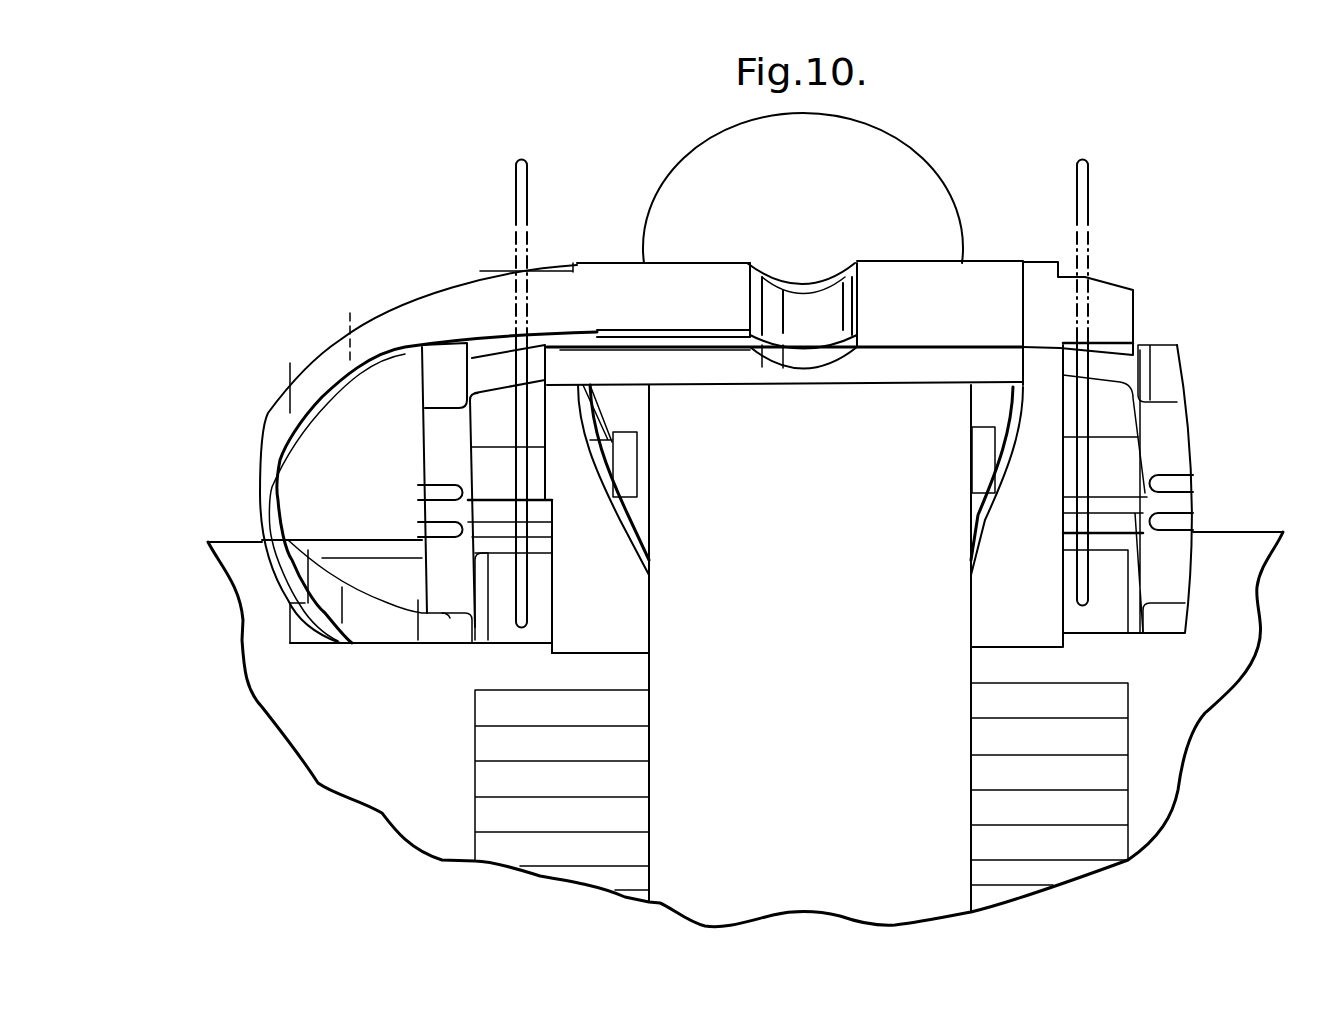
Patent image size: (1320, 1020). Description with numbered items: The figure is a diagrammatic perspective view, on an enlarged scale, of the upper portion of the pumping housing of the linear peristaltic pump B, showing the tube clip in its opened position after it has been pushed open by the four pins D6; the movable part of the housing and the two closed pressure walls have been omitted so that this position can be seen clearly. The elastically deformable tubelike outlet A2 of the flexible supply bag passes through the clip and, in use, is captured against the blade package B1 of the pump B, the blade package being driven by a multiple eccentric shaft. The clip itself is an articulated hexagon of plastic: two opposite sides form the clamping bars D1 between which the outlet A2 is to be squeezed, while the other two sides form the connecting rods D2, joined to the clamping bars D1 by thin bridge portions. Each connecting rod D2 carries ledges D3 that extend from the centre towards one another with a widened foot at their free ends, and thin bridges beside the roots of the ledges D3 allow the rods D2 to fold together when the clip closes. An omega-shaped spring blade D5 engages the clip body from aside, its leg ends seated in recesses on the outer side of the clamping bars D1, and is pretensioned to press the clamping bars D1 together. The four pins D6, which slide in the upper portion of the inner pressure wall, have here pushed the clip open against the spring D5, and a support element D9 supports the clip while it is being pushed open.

The tubelike outlet A2 is at (920, 182).
The clamping bars D1 is at (662, 366).
The connecting rods D2 is at (438, 578).
The ledges D3 is at (1115, 502).
The omega-shaped spring blade D5 is at (312, 360).
The pins D6 is at (510, 268).
The support element D9 is at (1035, 598).
The linear peristaltic pump B is at (268, 738).
The blade package B1 is at (475, 787).